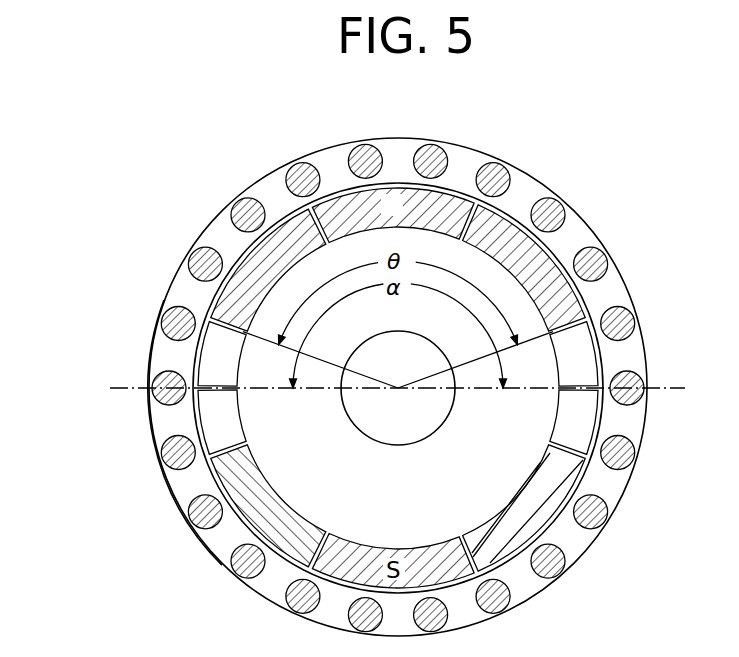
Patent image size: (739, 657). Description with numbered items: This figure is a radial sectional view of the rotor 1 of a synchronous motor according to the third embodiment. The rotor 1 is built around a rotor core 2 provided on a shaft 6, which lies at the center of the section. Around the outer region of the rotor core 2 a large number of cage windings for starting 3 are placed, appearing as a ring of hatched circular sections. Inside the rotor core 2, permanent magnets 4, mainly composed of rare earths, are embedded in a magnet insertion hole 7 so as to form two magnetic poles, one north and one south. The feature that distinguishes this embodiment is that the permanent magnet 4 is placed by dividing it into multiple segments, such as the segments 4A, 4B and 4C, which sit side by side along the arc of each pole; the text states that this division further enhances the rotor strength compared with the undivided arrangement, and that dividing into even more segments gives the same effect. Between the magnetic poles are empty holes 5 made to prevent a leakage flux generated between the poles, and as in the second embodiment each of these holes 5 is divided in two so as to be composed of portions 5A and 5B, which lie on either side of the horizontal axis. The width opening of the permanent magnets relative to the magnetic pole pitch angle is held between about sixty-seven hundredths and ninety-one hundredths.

The rotor 1 is at (540, 178).
The rotor core 2 is at (573, 240).
The cage windings for starting 3 is at (625, 297).
The permanent magnet 4 is at (535, 513).
The permanent magnet segment 4A is at (250, 258).
The permanent magnet segment 4B is at (445, 207).
The permanent magnet segment 4C is at (507, 235).
The empty holes 5 is at (60, 332).
The hole portion 5A is at (207, 363).
The hole portion 5B is at (208, 428).
The shaft 6 is at (398, 388).
The magnet insertion hole 7 is at (211, 547).